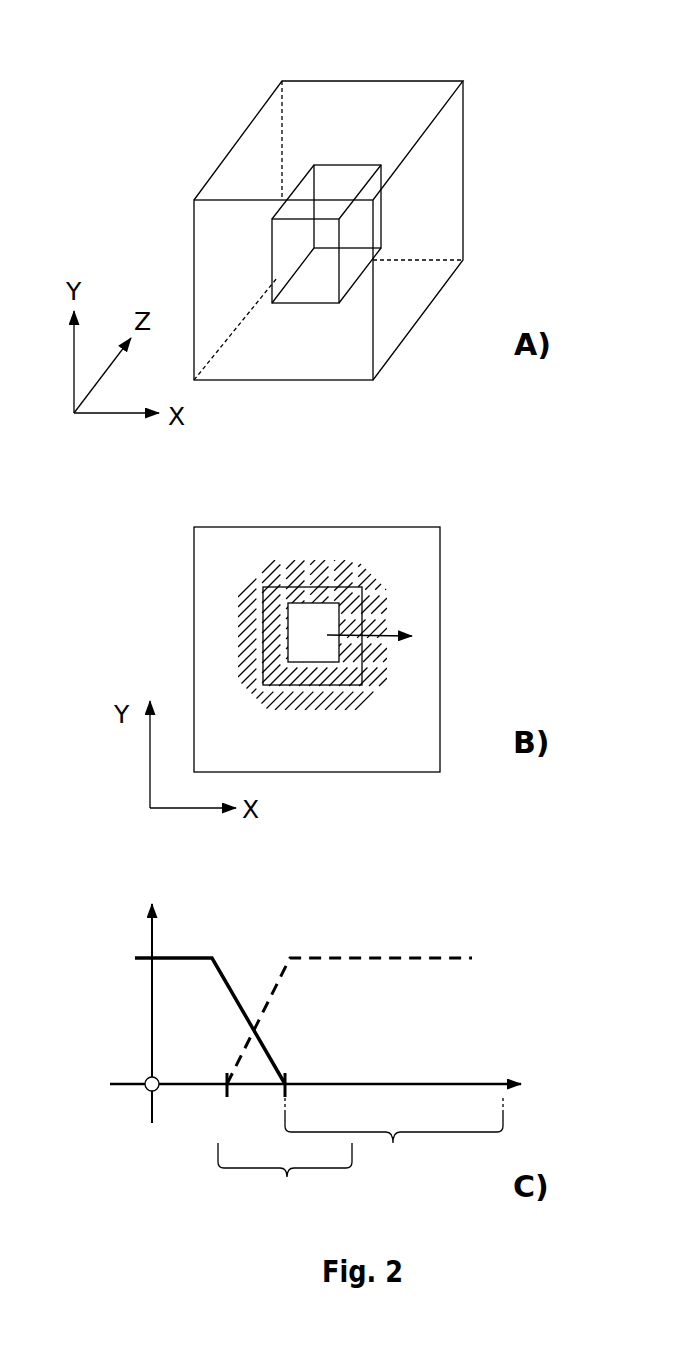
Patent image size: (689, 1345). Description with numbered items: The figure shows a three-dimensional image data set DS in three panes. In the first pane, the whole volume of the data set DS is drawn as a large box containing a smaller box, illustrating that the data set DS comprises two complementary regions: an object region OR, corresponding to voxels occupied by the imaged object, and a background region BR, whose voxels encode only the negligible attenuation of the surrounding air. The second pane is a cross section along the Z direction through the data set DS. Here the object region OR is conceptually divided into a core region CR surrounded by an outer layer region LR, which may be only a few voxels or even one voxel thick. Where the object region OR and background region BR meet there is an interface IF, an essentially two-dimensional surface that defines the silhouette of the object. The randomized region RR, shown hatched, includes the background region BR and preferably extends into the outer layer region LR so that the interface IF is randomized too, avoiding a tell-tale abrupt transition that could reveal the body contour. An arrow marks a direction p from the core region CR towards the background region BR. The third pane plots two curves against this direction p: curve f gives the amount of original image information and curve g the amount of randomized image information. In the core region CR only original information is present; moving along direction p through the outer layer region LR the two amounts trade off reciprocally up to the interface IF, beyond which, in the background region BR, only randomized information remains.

The 3D image data set DS is at (393, 81).
The background region BR is at (252, 143).
The object region OR is at (282, 256).
The randomized region RR is at (297, 570).
The core region CR is at (343, 595).
The outer layer region LR is at (256, 663).
The interface IF is at (368, 672).
The direction p is at (326, 848).
The curve of original image information f is at (198, 957).
The curve of randomized image information g is at (398, 957).